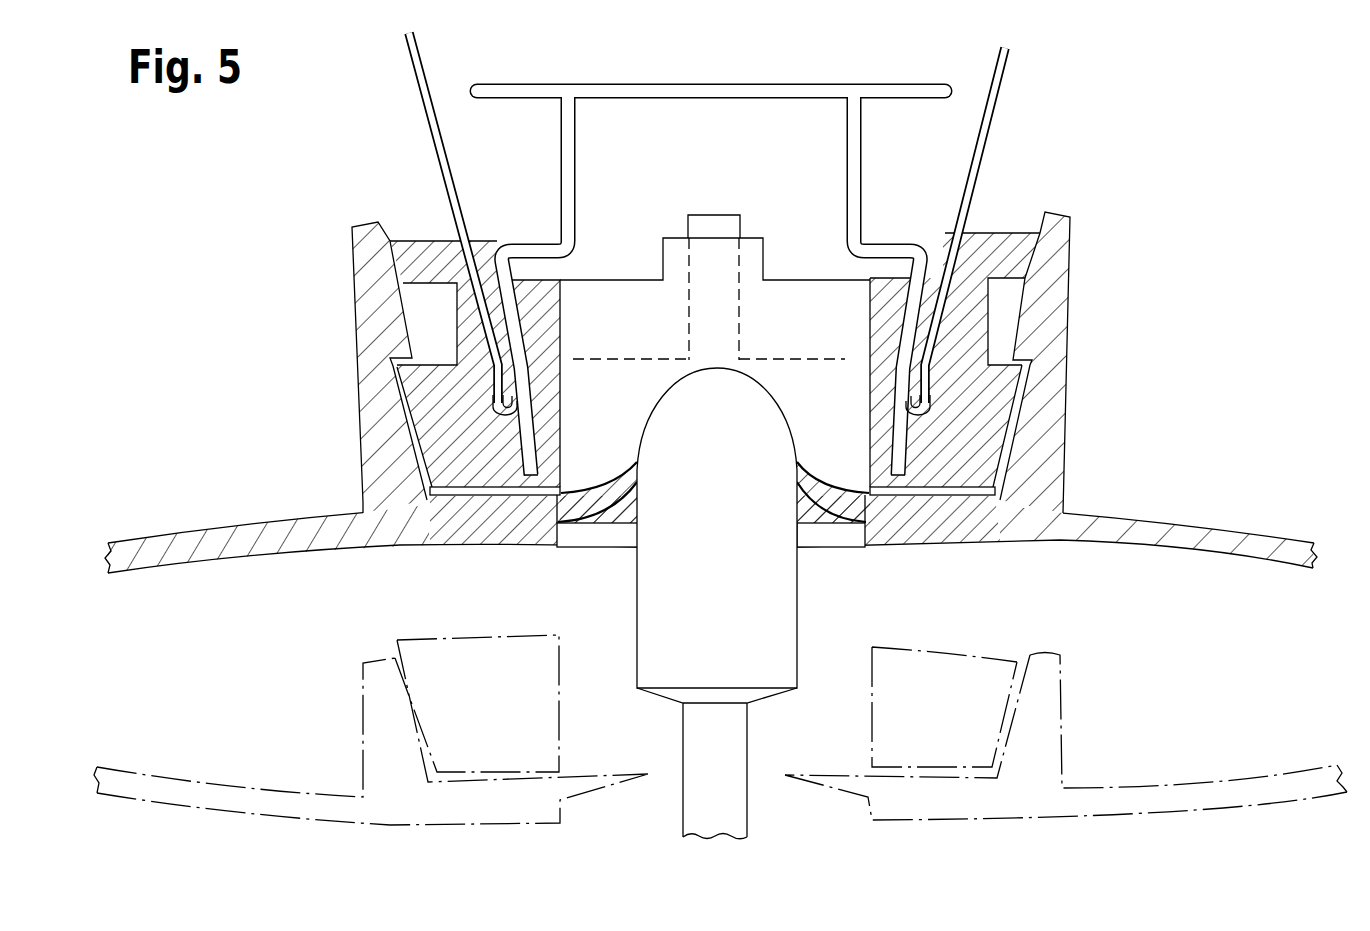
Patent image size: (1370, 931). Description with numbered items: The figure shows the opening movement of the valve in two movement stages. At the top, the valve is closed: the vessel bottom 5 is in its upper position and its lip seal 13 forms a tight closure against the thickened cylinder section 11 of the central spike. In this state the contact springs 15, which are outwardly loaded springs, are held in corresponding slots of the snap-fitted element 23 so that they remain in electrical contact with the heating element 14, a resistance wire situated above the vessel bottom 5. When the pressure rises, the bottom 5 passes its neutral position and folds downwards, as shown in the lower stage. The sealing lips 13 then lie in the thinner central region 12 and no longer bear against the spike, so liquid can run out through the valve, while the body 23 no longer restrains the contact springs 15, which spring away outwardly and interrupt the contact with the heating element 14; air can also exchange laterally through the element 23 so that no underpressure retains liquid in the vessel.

The vessel bottom 5 is at (1162, 526).
The thicker region of the spike 11 is at (648, 585).
The central region of the spike 12 is at (693, 817).
The lip seal 13 is at (816, 490).
The electrical heating element 14 is at (750, 86).
The contact springs 15 is at (432, 127).
The element attached via a snap joint 23 is at (990, 247).